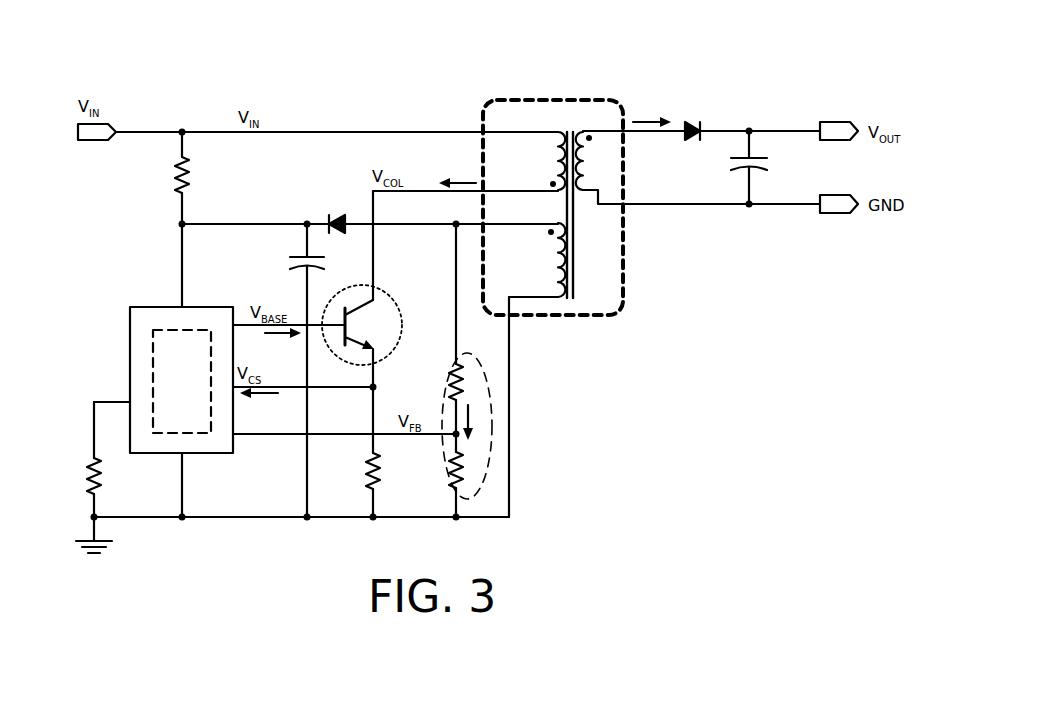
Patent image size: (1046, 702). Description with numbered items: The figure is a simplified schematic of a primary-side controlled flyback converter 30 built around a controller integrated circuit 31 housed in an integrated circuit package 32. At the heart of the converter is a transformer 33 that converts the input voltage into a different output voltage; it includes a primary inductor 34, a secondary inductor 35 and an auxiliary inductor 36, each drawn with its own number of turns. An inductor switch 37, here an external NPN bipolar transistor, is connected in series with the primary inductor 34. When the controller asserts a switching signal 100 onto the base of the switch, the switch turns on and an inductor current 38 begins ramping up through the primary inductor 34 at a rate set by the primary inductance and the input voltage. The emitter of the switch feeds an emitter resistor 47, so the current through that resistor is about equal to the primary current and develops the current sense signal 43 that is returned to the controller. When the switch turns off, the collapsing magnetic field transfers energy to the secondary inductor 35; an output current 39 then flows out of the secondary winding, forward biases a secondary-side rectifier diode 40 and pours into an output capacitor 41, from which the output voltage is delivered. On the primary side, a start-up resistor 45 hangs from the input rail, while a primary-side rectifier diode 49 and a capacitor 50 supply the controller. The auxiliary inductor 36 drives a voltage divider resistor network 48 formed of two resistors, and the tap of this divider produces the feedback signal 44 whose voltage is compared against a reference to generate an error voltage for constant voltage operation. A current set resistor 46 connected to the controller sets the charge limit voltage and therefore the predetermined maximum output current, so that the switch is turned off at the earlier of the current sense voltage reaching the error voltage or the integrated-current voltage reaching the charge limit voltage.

The primary-side controlled flyback converter 30 is at (459, 59).
The controller integrated circuit 31 is at (182, 381).
The integrated circuit package 32 is at (130, 317).
The transformer 33 is at (528, 100).
The primary inductor 34 is at (548, 148).
The secondary inductor 35 is at (698, 155).
The auxiliary inductor 36 is at (529, 247).
The inductor switch T1 37 is at (389, 304).
The inductor current I_LP 38 is at (462, 184).
The output current I_OUT 39 is at (649, 121).
The secondary-side rectifier diode D1 40 is at (691, 123).
The output capacitor 41 is at (768, 164).
The current sense signal 43 is at (262, 396).
The feedback signal 44 is at (468, 418).
The start-up resistor 45 is at (190, 176).
The current set resistor R_ISET 46 is at (87, 468).
The emitter resistor R_E 47 is at (365, 471).
The voltage divider resistor network 48 is at (475, 355).
The primary-side rectifier diode D2 49 is at (336, 215).
The capacitor 50 is at (289, 260).
The switching signal 100 is at (279, 336).